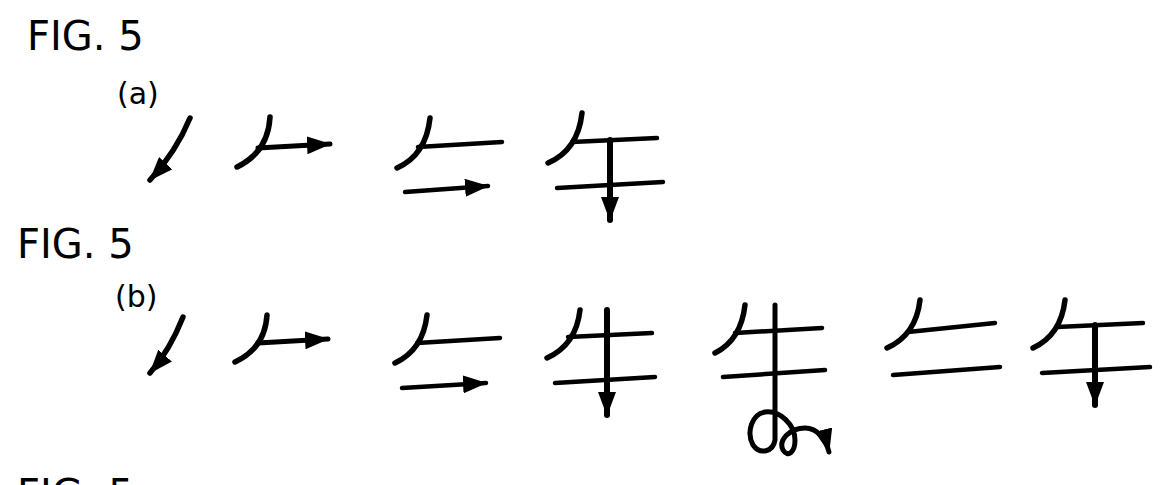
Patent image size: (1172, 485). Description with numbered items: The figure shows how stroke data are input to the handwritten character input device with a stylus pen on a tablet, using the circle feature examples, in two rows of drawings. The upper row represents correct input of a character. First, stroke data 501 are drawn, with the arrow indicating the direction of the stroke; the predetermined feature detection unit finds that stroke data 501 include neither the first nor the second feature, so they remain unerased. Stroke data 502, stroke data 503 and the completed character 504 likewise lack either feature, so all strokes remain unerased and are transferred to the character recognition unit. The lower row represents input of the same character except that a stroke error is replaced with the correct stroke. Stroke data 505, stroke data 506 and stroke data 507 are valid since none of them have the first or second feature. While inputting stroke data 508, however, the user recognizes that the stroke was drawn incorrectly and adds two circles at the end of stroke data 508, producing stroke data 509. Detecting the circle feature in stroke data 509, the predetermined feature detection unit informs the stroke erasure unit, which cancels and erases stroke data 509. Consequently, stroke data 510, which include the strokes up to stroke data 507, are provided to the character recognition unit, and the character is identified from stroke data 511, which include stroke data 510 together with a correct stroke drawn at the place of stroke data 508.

The stroke data 501 is at (192, 136).
The stroke data 502 is at (321, 136).
The stroke data 503 is at (473, 130).
The character 504 is at (626, 130).
The stroke data 505 is at (186, 338).
The stroke data 506 is at (301, 337).
The stroke data 507 is at (465, 334).
The stroke data 508 is at (631, 329).
The stroke data 509 is at (793, 324).
The stroke data 510 is at (950, 322).
The stroke data 511 is at (1095, 321).